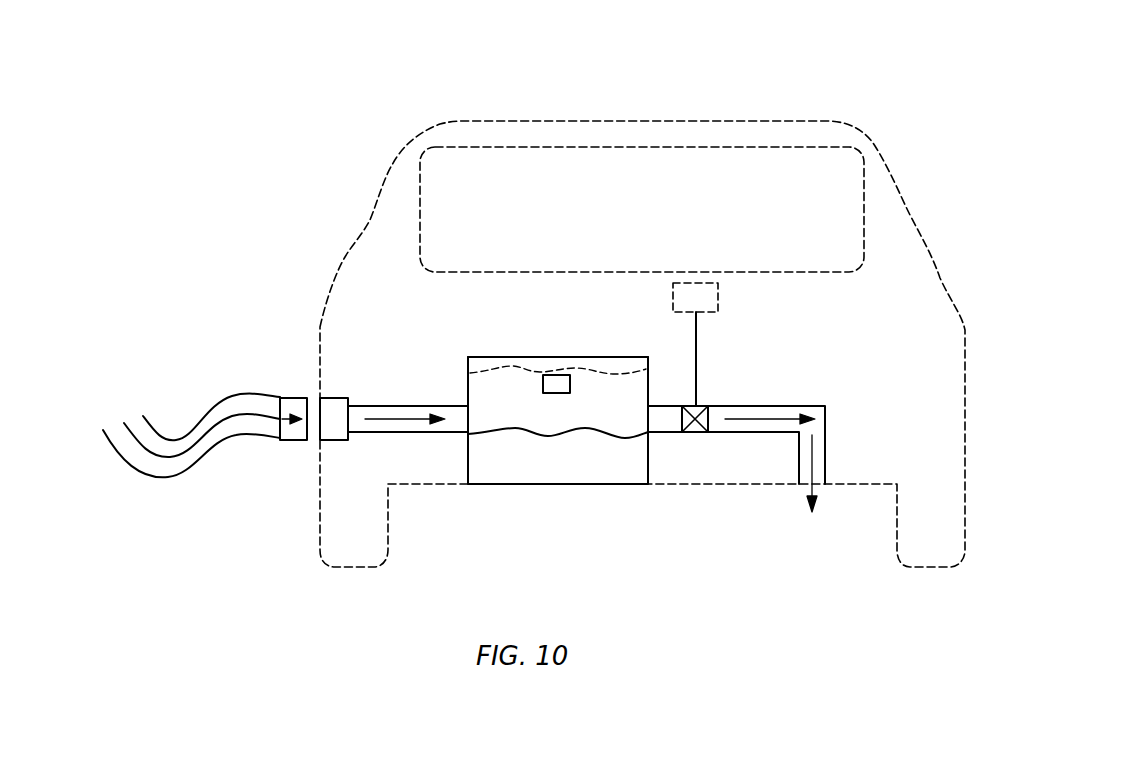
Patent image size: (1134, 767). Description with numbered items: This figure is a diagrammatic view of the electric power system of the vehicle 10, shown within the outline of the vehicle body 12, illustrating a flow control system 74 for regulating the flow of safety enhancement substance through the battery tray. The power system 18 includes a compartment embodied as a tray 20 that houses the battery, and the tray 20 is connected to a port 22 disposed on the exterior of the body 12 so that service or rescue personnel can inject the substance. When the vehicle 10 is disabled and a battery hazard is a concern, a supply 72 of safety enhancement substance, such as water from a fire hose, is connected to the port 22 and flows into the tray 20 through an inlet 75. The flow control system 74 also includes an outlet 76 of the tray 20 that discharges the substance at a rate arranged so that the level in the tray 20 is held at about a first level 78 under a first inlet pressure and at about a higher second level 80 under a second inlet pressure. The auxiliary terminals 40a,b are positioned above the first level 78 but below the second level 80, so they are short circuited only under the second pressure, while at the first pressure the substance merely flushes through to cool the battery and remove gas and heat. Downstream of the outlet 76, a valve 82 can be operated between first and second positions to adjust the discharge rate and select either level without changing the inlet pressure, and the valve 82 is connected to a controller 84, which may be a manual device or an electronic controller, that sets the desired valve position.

The vehicle 10 is at (878, 86).
The vehicle body 12 is at (911, 212).
The power system 18 is at (511, 340).
The tray 20 is at (484, 354).
The port 22 is at (330, 398).
The auxiliary terminals 40a,b is at (558, 375).
The supply 72 is at (234, 388).
The flow control system 74 is at (440, 338).
The inlet 75 is at (456, 436).
The outlet 76 is at (661, 436).
The first level 78 is at (526, 436).
The second level 80 is at (626, 373).
The valve 82 is at (697, 406).
The controller 84 is at (696, 283).